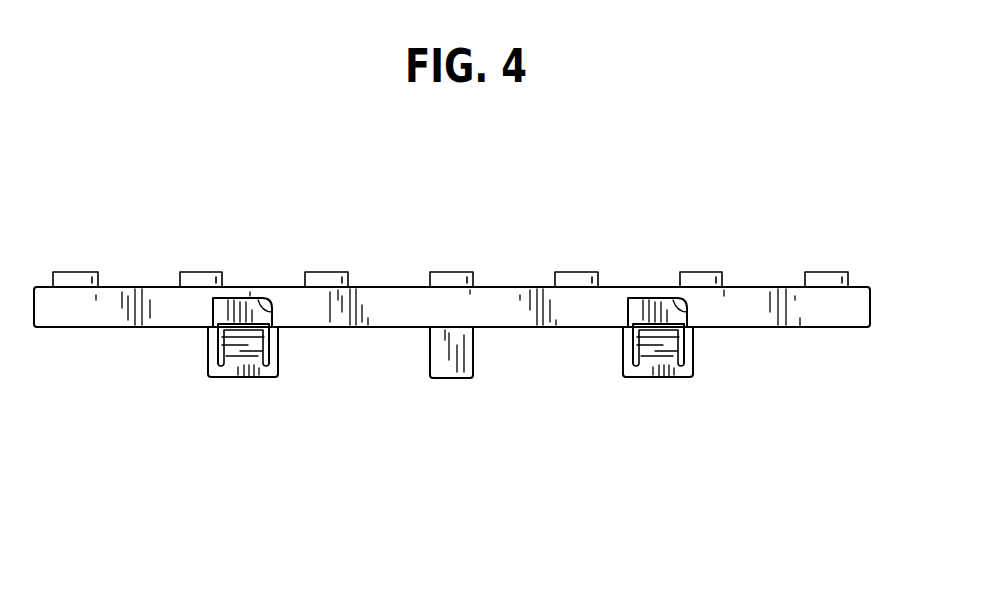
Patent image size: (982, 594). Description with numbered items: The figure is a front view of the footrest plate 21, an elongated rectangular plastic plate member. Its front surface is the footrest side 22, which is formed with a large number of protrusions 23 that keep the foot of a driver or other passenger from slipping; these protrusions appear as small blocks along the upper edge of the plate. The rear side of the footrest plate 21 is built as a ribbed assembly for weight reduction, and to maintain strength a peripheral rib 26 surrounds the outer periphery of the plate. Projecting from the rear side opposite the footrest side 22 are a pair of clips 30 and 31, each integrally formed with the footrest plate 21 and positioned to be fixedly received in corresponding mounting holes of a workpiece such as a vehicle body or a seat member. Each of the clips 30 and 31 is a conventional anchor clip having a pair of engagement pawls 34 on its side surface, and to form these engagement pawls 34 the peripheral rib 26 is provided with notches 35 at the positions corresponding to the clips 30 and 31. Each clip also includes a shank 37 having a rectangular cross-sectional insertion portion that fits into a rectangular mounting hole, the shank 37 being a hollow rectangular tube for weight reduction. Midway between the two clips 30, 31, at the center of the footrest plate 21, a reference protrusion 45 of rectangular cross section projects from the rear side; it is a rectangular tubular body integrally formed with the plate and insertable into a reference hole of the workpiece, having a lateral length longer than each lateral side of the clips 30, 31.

The footrest plate 21 is at (766, 257).
The footrest side 22 is at (406, 287).
The protrusions 23 is at (199, 277).
The peripheral rib 26 is at (342, 302).
The clip 30 is at (218, 380).
The clip 31 is at (640, 380).
The engagement pawls 34 is at (232, 347).
The notches 35 is at (257, 303).
The shank 37 is at (277, 347).
The reference protrusion 45 is at (438, 357).